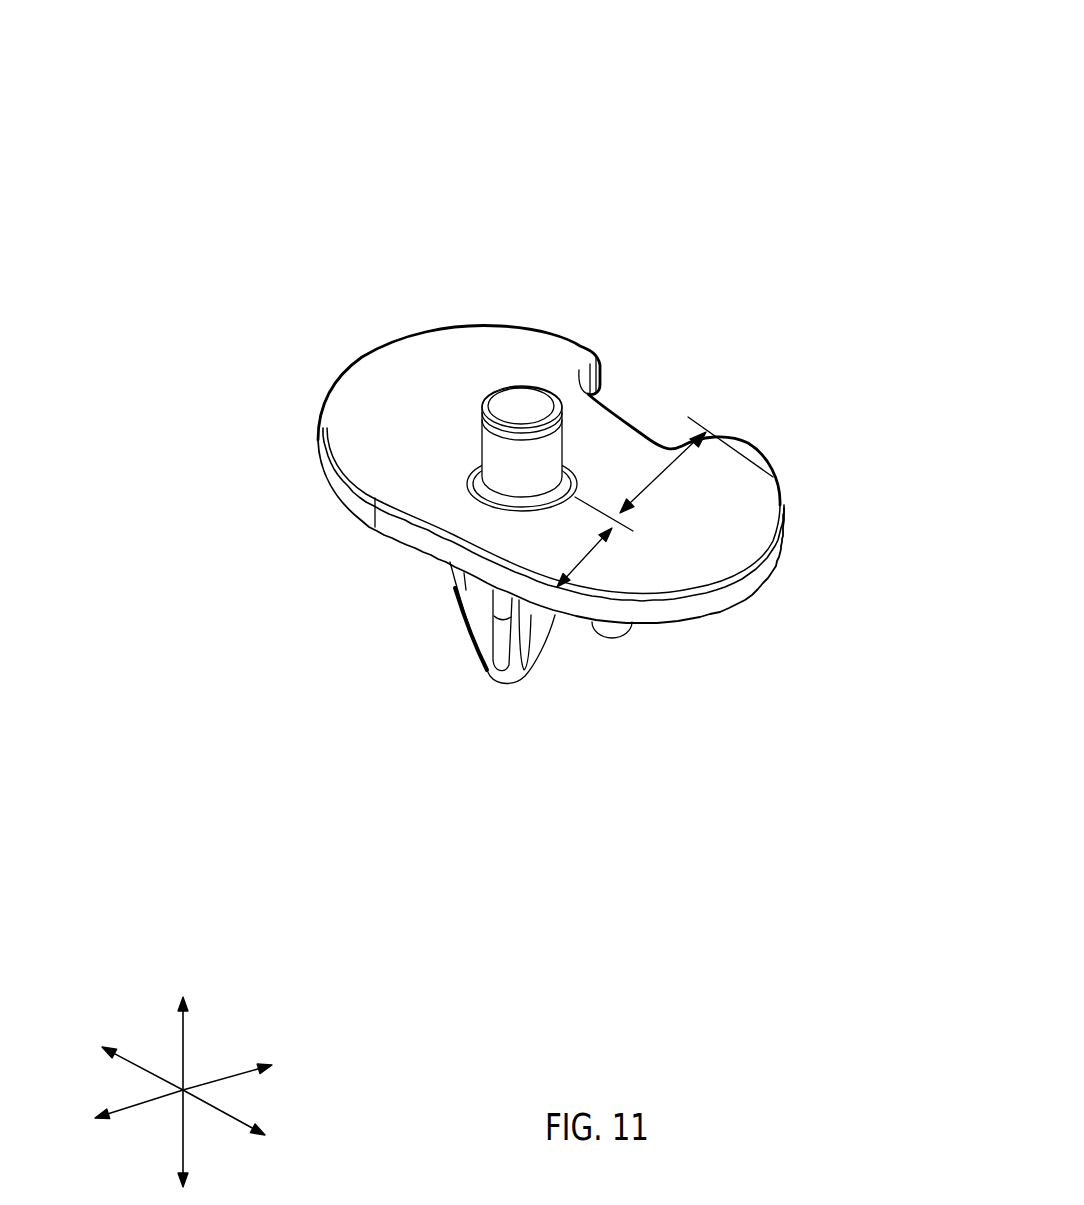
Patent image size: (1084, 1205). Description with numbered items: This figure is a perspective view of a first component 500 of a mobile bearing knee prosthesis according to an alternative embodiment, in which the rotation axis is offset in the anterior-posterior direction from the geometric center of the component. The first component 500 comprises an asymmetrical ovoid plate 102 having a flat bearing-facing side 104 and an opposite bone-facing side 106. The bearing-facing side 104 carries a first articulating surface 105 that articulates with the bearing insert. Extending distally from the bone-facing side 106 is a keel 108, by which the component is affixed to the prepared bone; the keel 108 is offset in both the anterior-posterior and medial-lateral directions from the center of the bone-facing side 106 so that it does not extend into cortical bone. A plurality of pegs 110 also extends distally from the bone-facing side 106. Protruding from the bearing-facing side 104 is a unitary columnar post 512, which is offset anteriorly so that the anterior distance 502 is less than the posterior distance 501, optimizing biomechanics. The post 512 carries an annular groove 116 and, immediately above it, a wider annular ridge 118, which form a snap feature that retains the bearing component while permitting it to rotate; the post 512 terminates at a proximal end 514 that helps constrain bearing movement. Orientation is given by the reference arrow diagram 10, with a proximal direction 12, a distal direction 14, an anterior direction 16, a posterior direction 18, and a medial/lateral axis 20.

The first component 500 is at (484, 206).
The asymmetrical ovoid plate 102 is at (747, 575).
The bearing-facing side 104 is at (707, 498).
The first articulating surface 105 is at (420, 508).
The bone-facing side 106 is at (657, 623).
The keel 108 is at (480, 623).
The pegs 110 is at (608, 634).
The annular groove 116 is at (482, 428).
The annular ridge 118 is at (484, 402).
The unitary columnar post 512 is at (504, 455).
The proximal end 514 is at (511, 400).
The posterior distance 501 is at (664, 485).
The anterior distance 502 is at (583, 554).
The reference arrow diagram 10 is at (145, 981).
The proximal direction 12 is at (187, 1040).
The distal direction 14 is at (187, 1143).
The anterior direction 16 is at (142, 1107).
The posterior direction 18 is at (240, 1068).
The medial/lateral axis 20 is at (146, 1060).